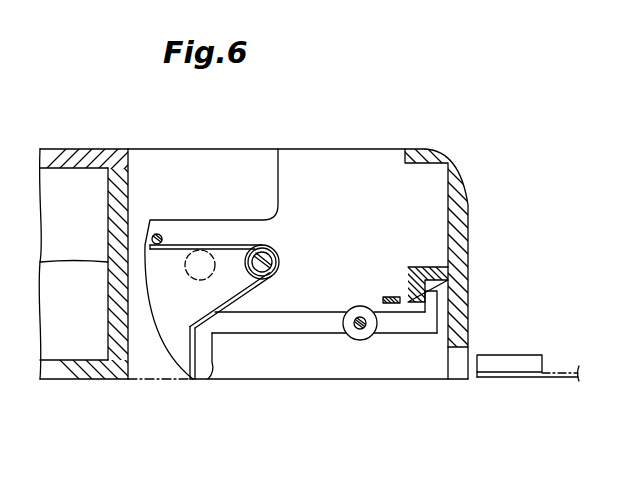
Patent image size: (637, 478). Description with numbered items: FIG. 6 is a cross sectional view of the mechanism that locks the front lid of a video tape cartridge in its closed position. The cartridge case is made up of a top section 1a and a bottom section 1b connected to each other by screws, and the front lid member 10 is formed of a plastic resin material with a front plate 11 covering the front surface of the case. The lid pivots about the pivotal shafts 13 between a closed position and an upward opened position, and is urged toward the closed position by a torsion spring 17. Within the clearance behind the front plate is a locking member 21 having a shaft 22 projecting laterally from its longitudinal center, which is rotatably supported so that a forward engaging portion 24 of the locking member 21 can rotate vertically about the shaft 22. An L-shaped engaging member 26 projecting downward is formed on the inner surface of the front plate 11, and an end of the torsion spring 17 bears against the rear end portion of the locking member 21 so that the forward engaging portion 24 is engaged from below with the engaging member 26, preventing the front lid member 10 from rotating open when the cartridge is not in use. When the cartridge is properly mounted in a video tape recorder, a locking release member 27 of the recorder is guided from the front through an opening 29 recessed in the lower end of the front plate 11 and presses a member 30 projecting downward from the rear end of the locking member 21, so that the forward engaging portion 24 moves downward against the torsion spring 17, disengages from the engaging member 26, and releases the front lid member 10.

The top section 1a is at (70, 163).
The bottom section 1b is at (88, 380).
The front lid member 10 is at (468, 209).
The front plate 11 is at (462, 247).
The pivotal shafts 13 is at (272, 256).
The torsion spring 17 is at (235, 292).
The locking member 21 is at (305, 318).
The shaft 22 is at (359, 318).
The forward engaging portion 24 is at (428, 298).
The L-shaped engaging member 26 is at (408, 288).
The locking release member 27 is at (518, 354).
The opening 29 is at (462, 369).
The member 30 is at (204, 380).